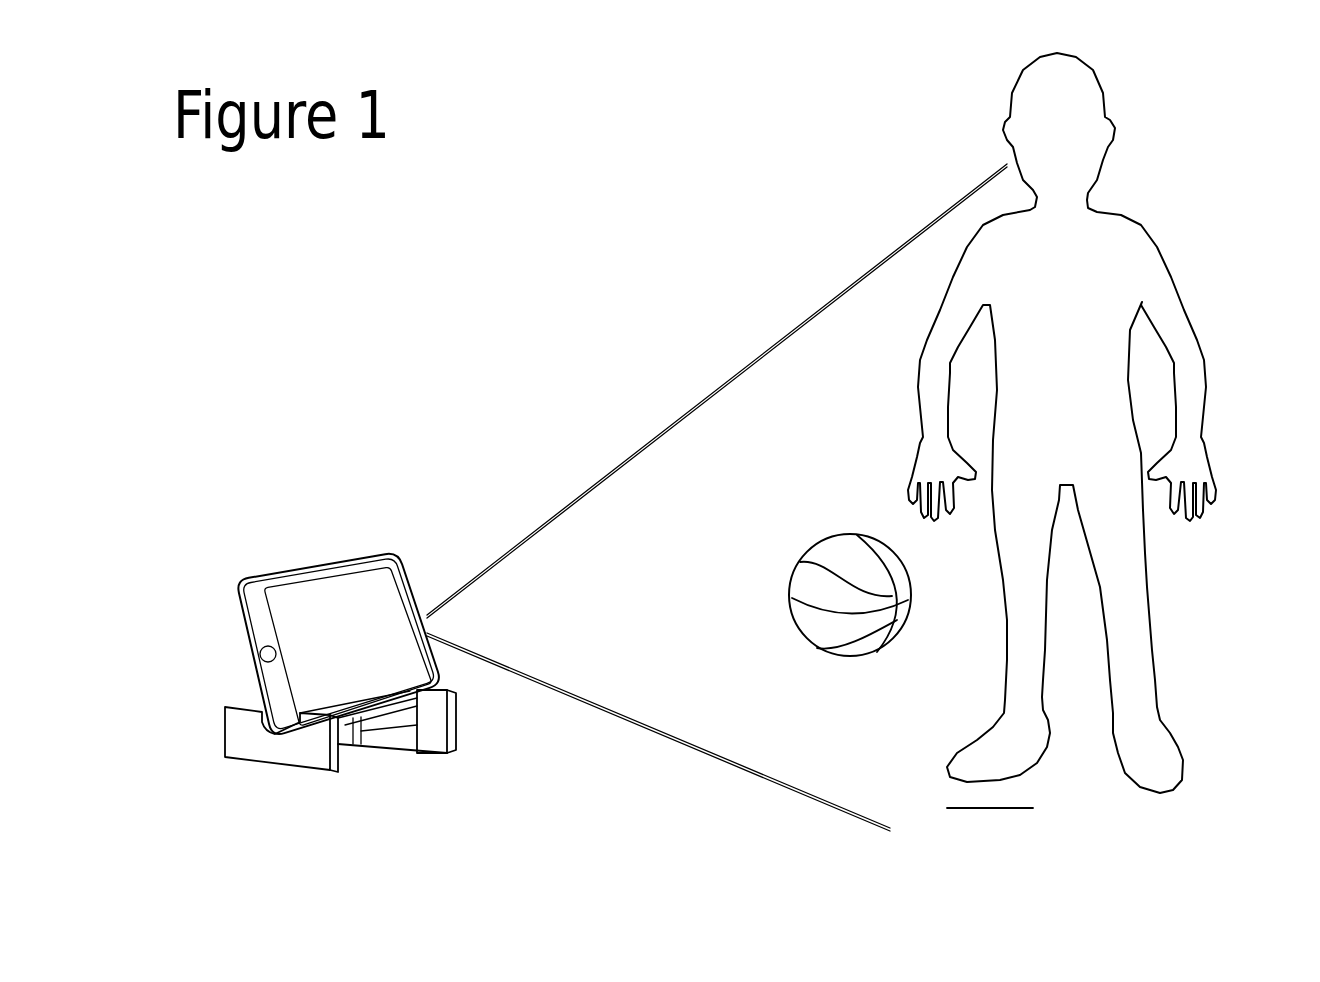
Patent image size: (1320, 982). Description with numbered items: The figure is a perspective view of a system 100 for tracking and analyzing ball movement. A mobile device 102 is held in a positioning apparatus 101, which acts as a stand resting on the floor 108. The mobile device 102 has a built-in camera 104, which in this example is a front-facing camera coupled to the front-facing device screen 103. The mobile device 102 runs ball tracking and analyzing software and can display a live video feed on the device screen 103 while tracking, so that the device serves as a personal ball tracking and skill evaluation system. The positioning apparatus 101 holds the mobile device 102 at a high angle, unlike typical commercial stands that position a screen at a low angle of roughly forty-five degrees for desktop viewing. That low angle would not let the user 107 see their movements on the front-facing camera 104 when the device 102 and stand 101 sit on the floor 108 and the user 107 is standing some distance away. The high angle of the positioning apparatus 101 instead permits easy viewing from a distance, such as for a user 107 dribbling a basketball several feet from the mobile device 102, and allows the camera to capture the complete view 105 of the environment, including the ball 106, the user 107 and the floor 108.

The system 100 is at (505, 178).
The positioning apparatus 101 is at (260, 750).
The mobile device 102 is at (243, 642).
The device screen 103 is at (292, 593).
The built-in camera 104 is at (428, 638).
The complete view 105 is at (567, 497).
The ball 106 is at (817, 582).
The user 107 is at (1107, 262).
The floor 108 is at (963, 795).